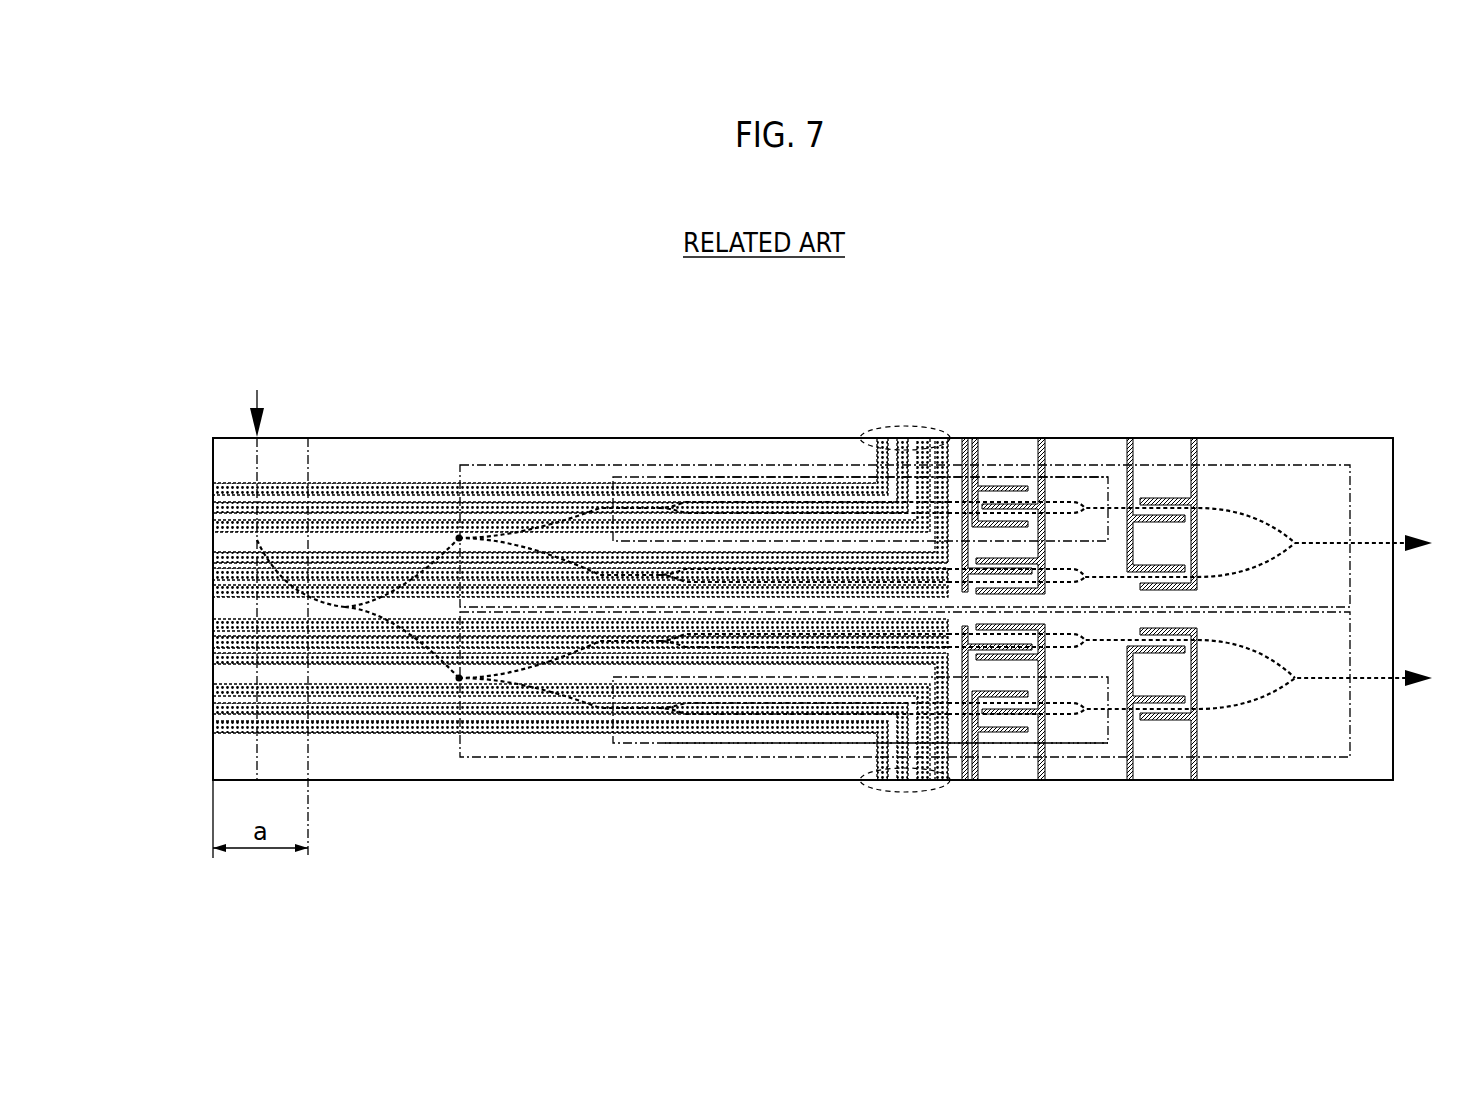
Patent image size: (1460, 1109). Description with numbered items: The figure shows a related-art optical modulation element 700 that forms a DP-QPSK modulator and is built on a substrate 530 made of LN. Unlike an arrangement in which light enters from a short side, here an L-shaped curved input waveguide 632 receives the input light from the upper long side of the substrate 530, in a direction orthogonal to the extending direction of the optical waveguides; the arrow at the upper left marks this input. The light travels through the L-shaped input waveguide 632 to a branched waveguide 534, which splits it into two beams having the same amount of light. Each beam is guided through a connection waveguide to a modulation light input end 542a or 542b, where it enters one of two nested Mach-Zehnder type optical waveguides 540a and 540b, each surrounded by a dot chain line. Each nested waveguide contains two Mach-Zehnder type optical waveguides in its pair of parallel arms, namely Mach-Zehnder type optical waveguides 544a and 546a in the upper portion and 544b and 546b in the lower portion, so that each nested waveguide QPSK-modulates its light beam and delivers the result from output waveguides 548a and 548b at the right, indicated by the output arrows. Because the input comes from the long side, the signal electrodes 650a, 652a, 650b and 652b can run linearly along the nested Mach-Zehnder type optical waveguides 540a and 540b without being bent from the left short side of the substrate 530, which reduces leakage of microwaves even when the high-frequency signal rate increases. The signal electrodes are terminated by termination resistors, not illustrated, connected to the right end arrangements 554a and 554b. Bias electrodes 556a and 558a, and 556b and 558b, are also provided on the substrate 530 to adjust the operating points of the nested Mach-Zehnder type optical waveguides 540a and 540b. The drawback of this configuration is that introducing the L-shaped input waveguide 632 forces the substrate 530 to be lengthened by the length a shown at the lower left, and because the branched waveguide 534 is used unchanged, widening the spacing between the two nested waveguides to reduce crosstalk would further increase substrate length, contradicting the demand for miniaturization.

The optical modulation element 700 is at (443, 318).
The substrate 530 is at (327, 438).
The branched waveguide 534 is at (336, 605).
The L-shaped curved input waveguide 632 is at (257, 538).
The modulation light input end 542a is at (459, 536).
The modulation light input end 542b is at (459, 680).
The nested Mach-Zehnder type optical waveguide 540a is at (505, 460).
The nested Mach-Zehnder type optical waveguide 540b is at (480, 758).
The Mach-Zehnder type optical waveguide 544a is at (695, 470).
The Mach-Zehnder type optical waveguide 544b is at (668, 745).
The Mach-Zehnder type optical waveguide 546a is at (618, 470).
The Mach-Zehnder type optical waveguide 546b is at (620, 745).
The right end arrangement 554a is at (896, 426).
The right end arrangement 554b is at (905, 792).
The bias electrode 556a is at (957, 432).
The bias electrode 556b is at (957, 785).
The bias electrode 558a is at (1162, 419).
The bias electrode 558b is at (1125, 785).
The output waveguide 548a is at (1368, 541).
The output waveguide 548b is at (1368, 677).
The signal electrode 650a is at (210, 484).
The signal electrode 650b is at (210, 684).
The signal electrode 652a is at (210, 552).
The signal electrode 652b is at (210, 619).